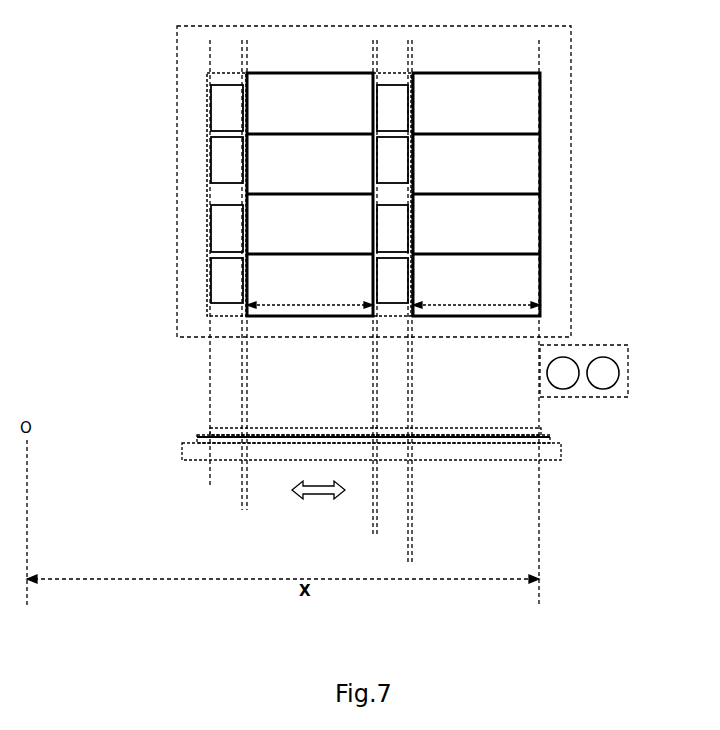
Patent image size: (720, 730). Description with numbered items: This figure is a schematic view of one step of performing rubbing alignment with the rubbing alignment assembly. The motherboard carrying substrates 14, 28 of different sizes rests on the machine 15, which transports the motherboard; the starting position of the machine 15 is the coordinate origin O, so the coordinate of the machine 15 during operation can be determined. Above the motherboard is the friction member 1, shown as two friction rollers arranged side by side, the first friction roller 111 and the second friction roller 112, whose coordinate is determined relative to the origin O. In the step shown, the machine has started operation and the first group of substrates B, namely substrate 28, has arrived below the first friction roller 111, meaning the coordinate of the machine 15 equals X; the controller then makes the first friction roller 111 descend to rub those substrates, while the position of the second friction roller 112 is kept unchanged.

The machine 15 is at (190, 320).
The substrate 14 is at (393, 290).
The substrate 28 is at (466, 297).
The friction member 1 is at (584, 382).
The first friction roller 111 is at (560, 373).
The second friction roller 112 is at (600, 373).